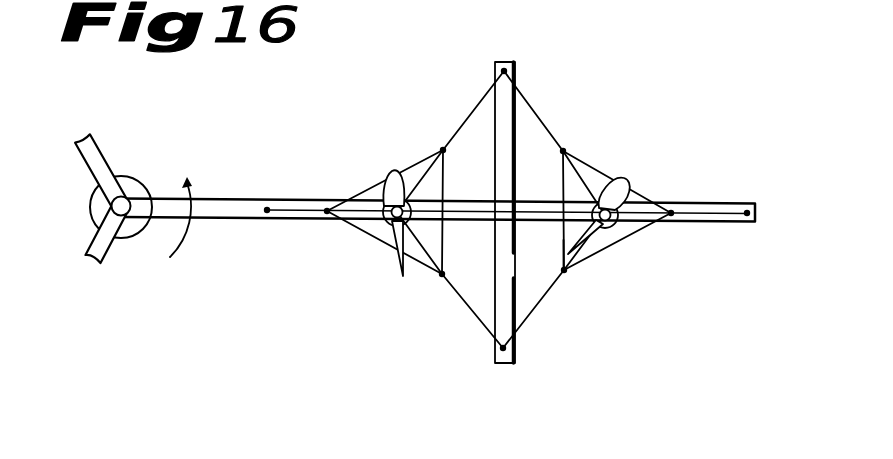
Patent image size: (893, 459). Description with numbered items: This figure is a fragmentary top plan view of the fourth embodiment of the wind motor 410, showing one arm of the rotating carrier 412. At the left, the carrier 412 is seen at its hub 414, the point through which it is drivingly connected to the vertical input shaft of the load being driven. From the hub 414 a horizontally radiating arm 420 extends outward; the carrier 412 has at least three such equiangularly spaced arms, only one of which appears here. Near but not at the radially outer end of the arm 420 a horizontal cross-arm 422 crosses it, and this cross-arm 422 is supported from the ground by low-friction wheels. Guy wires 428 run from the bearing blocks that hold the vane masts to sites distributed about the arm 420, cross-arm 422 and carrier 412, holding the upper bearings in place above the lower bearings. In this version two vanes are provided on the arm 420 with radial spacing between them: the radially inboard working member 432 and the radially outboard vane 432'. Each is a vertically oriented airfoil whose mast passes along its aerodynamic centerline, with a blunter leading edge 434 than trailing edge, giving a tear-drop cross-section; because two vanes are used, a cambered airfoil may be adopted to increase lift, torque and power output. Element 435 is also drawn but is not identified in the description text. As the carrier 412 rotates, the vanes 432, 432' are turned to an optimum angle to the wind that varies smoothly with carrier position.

The wind motor 410 is at (290, 144).
The carrier 412 is at (76, 162).
The hub 414 is at (125, 202).
The arm 420 is at (229, 199).
The cross-arm 422 is at (504, 128).
The guy wires 428 is at (591, 166).
The working member 432 is at (433, 223).
The vane 432' is at (642, 214).
The leading edge 434 is at (622, 192).
The cross member 435 is at (562, 256).